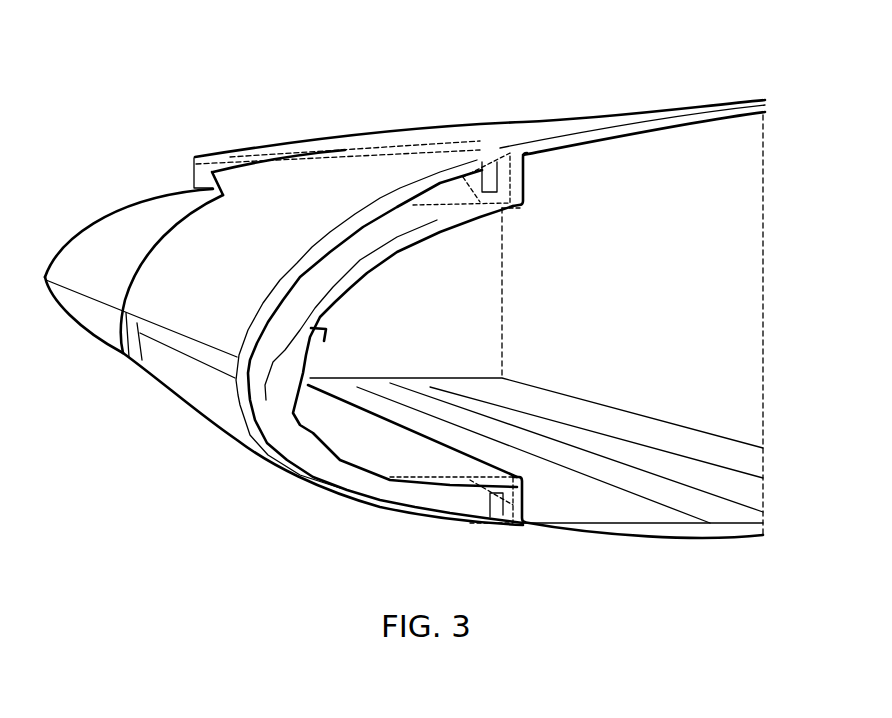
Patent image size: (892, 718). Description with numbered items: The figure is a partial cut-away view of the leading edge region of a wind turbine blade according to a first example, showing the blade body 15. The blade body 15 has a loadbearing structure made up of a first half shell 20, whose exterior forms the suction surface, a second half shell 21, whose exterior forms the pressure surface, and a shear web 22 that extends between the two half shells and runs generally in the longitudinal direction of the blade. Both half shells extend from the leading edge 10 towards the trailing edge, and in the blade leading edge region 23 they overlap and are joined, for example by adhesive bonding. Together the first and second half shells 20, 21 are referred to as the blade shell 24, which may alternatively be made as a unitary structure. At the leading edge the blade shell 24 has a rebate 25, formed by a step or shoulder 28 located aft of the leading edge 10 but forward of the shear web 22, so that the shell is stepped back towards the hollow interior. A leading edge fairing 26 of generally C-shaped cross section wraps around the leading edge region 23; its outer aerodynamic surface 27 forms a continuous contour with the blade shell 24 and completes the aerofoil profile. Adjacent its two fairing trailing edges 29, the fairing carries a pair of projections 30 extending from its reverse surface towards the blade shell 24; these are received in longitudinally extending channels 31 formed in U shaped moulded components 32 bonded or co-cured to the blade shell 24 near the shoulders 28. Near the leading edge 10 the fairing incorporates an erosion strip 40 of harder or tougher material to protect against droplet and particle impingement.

The leading edge 10 is at (125, 357).
The blade body 15 is at (604, 600).
The first half shell 20 is at (657, 118).
The second half shell 21 is at (647, 540).
The shear web 22 is at (740, 285).
The blade leading edge region 23 is at (138, 467).
The blade shell 24 is at (738, 530).
The rebate 25 is at (405, 228).
The leading edge fairing 26 is at (173, 277).
The outer aerodynamic surface 27 is at (272, 251).
The shoulder 28 is at (512, 458).
The fairing trailing edges 29 is at (500, 152).
The projections 30 is at (487, 165).
The channels 31 is at (505, 175).
The U shaped moulded component 32 is at (472, 178).
The erosion strip 40 is at (225, 382).